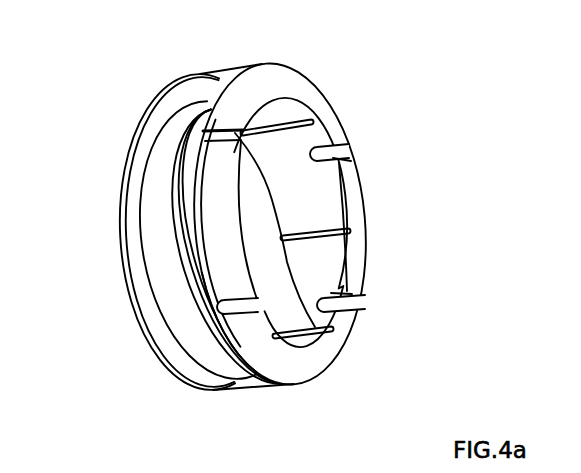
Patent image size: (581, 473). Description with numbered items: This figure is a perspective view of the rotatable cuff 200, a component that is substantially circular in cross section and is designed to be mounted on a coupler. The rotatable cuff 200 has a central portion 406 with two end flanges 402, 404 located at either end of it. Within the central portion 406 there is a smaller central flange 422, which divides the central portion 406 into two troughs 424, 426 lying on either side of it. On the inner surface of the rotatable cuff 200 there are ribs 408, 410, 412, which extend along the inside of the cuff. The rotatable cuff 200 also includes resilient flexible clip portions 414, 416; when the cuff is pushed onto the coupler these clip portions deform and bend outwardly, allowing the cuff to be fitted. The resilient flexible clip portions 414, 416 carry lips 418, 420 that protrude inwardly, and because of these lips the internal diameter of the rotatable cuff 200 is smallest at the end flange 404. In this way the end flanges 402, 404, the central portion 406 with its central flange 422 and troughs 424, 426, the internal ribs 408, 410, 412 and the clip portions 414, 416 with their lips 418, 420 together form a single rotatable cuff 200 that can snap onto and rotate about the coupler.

The rotatable cuff 200 is at (160, 92).
The end flange 402 is at (122, 190).
The end flange 404 is at (305, 383).
The central portion 406 is at (207, 62).
The rib 408 is at (330, 227).
The rib 410 is at (290, 125).
The rib 412 is at (322, 315).
The resilient flexible clip portion 414 is at (225, 277).
The resilient flexible clip portion 416 is at (367, 275).
The lip 418 is at (343, 183).
The lip 420 is at (241, 186).
The central flange 422 is at (203, 290).
The trough 424 is at (157, 257).
The trough 426 is at (200, 270).